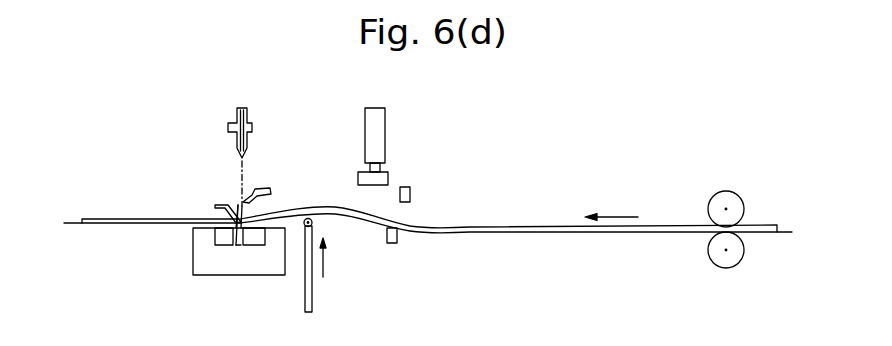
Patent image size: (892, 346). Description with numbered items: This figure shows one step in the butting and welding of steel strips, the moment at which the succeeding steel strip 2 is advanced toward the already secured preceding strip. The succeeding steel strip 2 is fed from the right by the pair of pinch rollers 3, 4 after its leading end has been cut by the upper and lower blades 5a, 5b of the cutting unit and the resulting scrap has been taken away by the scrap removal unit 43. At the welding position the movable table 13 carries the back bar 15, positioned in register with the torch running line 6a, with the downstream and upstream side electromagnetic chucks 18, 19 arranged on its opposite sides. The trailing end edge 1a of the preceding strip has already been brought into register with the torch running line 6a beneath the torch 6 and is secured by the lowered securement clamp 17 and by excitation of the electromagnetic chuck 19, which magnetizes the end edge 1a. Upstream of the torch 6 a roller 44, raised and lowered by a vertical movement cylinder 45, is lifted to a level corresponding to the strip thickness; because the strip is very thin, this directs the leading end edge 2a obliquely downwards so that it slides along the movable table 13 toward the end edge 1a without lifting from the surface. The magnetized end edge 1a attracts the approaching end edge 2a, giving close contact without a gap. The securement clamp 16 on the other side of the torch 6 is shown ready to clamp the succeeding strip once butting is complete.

The succeeding steel strip 2 is at (650, 228).
The end edge of the succeeding steel strip 2a is at (240, 247).
The pinch roller 3 is at (744, 210).
The pinch roller 4 is at (739, 256).
The torch 6 is at (237, 117).
The torch running line 6a is at (245, 172).
The end edge of the preceding steel strip 1a is at (238, 205).
The movable table 13 is at (198, 262).
The back bar 15 is at (238, 247).
The securement clamp 16 is at (268, 186).
The securement clamp 17 is at (213, 207).
The downstream side electromagnetic chuck 18 is at (258, 246).
The upstream side electromagnetic chuck 19 is at (220, 247).
The scrap removal unit 43 is at (388, 138).
The roller 44 is at (312, 224).
The vertical movement cylinder 45 is at (313, 292).
The upper blade 5a is at (411, 198).
The lower blade 5b is at (397, 238).